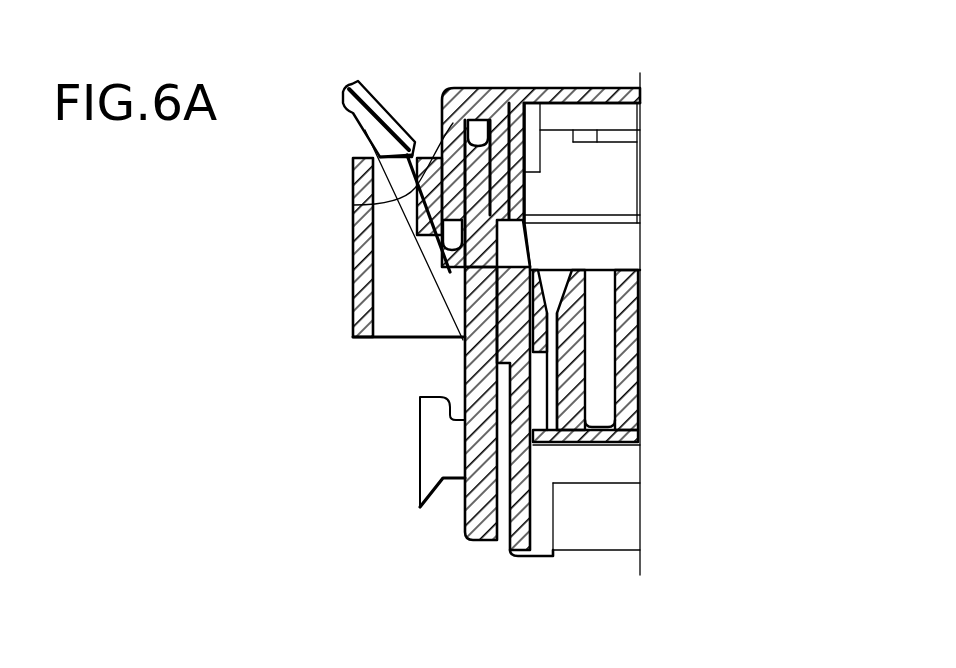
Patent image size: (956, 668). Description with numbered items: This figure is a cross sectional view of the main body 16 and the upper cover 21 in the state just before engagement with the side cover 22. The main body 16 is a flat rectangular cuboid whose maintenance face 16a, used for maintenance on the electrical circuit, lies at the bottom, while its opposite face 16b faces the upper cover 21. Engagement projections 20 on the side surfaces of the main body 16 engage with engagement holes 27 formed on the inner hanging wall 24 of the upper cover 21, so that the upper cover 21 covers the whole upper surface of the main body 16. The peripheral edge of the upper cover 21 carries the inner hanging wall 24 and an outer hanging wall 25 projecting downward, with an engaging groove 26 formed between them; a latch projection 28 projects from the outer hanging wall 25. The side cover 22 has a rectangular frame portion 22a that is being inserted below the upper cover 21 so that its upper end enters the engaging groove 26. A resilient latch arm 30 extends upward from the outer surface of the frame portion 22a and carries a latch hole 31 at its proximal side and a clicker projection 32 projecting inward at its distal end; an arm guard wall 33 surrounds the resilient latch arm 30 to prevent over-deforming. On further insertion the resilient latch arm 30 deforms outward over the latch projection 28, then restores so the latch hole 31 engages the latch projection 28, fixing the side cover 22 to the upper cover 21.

The main body 16 is at (620, 205).
The maintenance face 16a is at (592, 553).
The opposite face 16b is at (625, 130).
The engagement projection 20 is at (626, 312).
The upper cover 21 is at (588, 88).
The side cover 22 is at (464, 510).
The frame portion 22a is at (478, 372).
The inner hanging wall 24 is at (503, 125).
The outer hanging wall 25 is at (438, 100).
The engaging groove 26 is at (484, 112).
The engagement hole 27 is at (525, 233).
The latch projection 28 is at (348, 207).
The resilient latch arm 30 is at (356, 78).
The latch hole 31 is at (350, 164).
The clicker projection 32 is at (408, 128).
The arm guard wall 33 is at (357, 265).